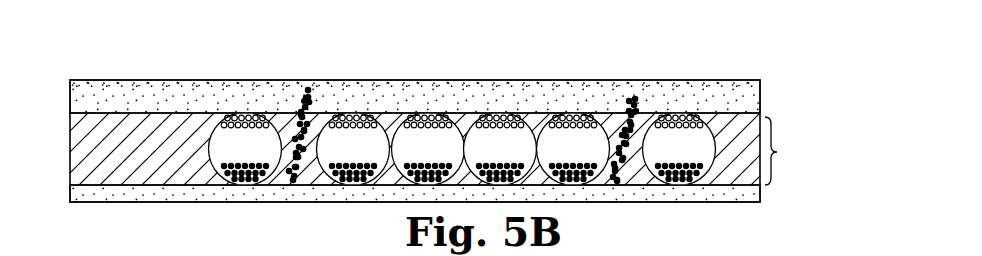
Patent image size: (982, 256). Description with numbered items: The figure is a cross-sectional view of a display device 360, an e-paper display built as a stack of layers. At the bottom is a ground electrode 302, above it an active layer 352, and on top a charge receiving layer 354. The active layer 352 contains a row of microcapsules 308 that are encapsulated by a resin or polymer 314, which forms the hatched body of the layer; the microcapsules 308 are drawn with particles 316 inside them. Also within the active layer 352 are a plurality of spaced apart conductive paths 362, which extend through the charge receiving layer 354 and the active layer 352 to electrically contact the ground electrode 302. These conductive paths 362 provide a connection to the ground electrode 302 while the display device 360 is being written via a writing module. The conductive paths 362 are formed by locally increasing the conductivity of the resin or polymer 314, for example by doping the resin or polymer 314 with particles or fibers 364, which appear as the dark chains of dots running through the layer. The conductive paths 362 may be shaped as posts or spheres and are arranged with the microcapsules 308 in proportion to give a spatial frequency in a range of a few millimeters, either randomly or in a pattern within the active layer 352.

The display device 360 is at (529, 33).
The conductive paths 362 is at (294, 71).
The particles or fibers 364 is at (318, 90).
The microcapsules 308 is at (430, 115).
The electrophoretic particles 316 is at (447, 153).
The resin or polymer 314 is at (80, 163).
The charge receiving layer 354 is at (753, 93).
The active layer 352 is at (787, 151).
The ground electrode 302 is at (753, 197).